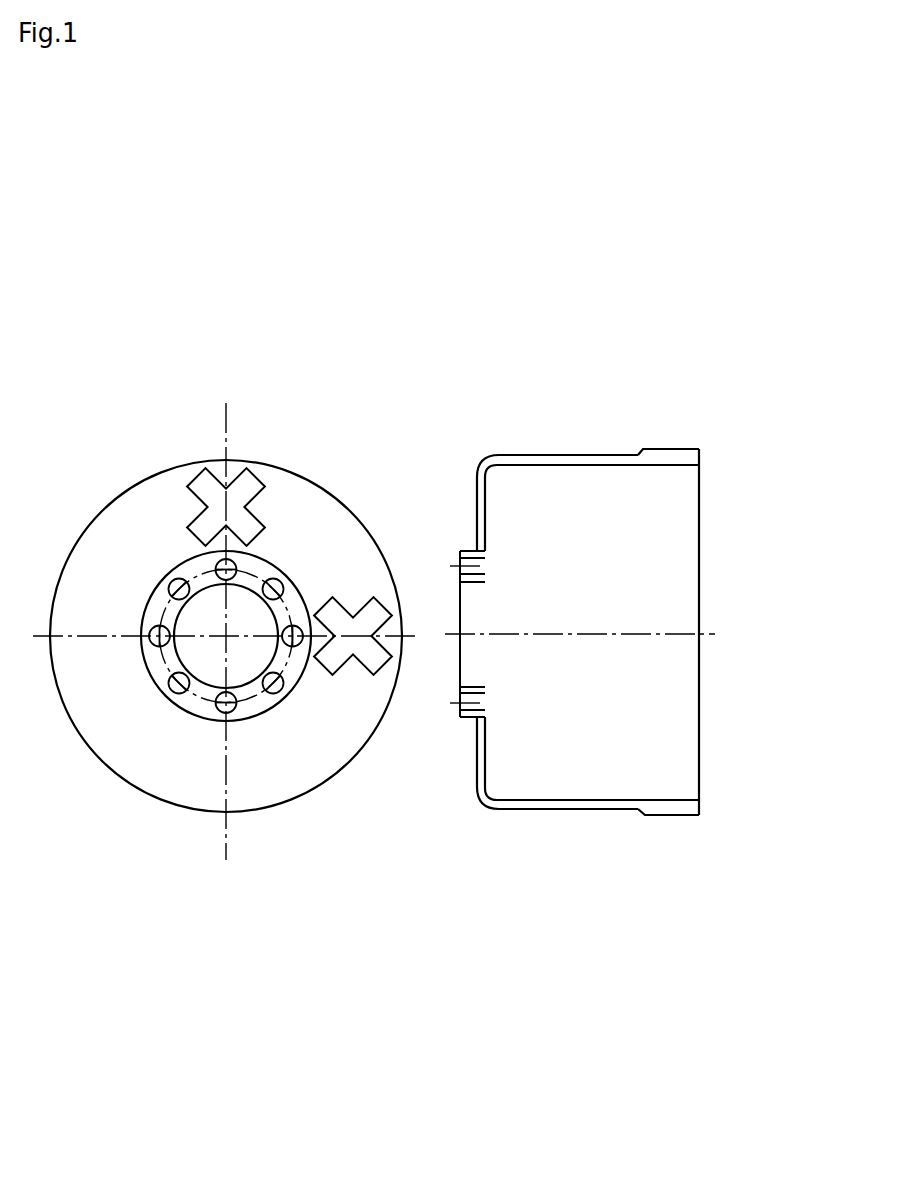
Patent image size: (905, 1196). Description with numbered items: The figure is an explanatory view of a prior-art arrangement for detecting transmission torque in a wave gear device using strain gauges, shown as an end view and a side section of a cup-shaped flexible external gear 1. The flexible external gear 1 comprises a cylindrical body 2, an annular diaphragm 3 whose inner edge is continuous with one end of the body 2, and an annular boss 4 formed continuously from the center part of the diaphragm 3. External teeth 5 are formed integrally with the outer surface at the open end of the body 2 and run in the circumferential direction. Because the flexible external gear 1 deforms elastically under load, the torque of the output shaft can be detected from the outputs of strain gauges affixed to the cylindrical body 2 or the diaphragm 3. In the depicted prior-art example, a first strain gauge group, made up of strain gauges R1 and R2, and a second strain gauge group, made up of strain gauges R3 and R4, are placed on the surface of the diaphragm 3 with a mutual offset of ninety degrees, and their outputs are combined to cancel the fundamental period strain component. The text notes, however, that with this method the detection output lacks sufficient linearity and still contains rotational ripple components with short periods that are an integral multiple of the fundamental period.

The flexible external gear 1 is at (397, 639).
The cylindrical body 2 is at (549, 464).
The annular diaphragm 3 is at (187, 758).
The annular boss 4 is at (158, 672).
The external teeth 5 is at (675, 449).
The strain gauge R1 is at (217, 507).
The strain gauge R2 is at (233, 507).
The strain gauge R3 is at (353, 634).
The strain gauge R4 is at (317, 691).